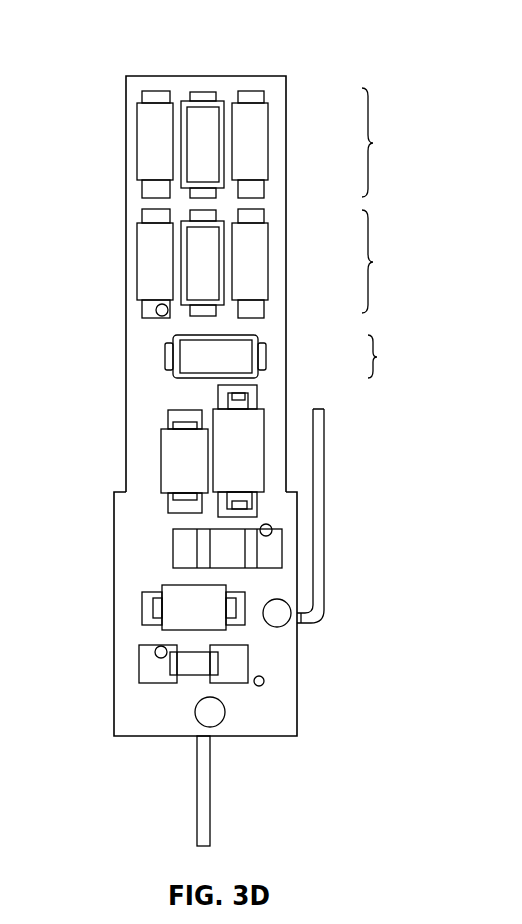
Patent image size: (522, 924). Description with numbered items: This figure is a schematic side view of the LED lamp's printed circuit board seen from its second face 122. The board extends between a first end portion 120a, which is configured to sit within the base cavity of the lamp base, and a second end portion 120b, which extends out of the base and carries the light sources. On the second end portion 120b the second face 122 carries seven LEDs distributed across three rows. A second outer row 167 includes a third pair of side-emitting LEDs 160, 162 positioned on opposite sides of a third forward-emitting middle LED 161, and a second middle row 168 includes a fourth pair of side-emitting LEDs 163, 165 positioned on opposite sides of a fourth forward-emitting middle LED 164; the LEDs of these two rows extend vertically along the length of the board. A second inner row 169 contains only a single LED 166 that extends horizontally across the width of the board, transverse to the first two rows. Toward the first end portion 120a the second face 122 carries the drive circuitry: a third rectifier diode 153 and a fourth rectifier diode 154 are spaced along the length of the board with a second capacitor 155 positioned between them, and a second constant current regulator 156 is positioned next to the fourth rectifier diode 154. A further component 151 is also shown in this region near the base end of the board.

The first end portion 120a is at (132, 714).
The second end portion 120b is at (286, 84).
The second face 122 is at (143, 377).
The electronic component 151 is at (187, 661).
The third rectifier diode 153 is at (178, 607).
The fourth rectifier diode 154 is at (175, 460).
The second capacitor 155 is at (230, 556).
The second constant current regulator 156 is at (245, 468).
The side-emitting LED 160 is at (146, 130).
The third forward-emitting middle LED 161 is at (200, 116).
The side-emitting LED 162 is at (267, 130).
The side-emitting LED 163 is at (146, 243).
The fourth forward-emitting middle LED 164 is at (208, 244).
The side-emitting LED 165 is at (267, 248).
The single LED 166 is at (235, 355).
The second outer row 167 is at (392, 142).
The second middle row 168 is at (392, 261).
The second inner row 169 is at (395, 356).